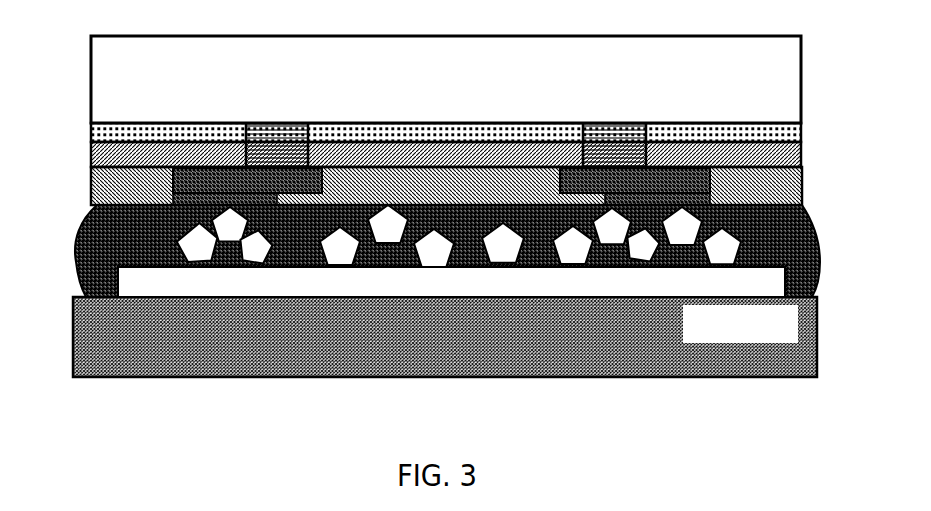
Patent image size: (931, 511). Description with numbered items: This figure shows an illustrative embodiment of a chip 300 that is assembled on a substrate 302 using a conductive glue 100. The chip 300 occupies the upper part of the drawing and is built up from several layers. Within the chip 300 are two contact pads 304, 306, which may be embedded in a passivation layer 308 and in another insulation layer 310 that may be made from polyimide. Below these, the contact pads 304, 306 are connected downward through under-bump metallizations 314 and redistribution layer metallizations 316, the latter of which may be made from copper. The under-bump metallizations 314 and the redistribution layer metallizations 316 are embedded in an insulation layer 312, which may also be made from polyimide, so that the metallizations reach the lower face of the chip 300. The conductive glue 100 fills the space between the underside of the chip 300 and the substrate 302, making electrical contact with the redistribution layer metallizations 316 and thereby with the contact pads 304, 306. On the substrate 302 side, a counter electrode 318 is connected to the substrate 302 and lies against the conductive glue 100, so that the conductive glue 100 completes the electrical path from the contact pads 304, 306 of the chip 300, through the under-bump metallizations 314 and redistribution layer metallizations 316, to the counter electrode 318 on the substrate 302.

The chip 300 is at (185, 60).
The substrate 302 is at (233, 350).
The contact pad 304 is at (277, 135).
The contact pad 306 is at (616, 146).
The passivation layer 308 is at (440, 136).
The insulation layer 310 is at (113, 157).
The insulation layer 312 is at (107, 187).
The under-bump metallization 314 is at (560, 181).
The redistribution layer metallization 316 is at (605, 199).
The counter electrode 318 is at (451, 282).
The conductive glue 100 is at (108, 247).